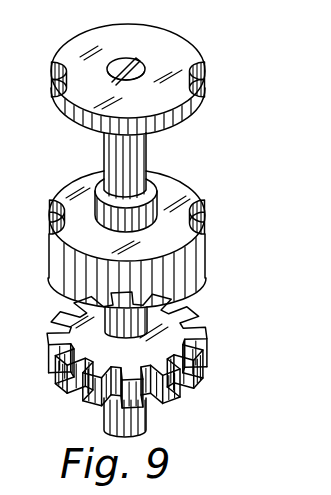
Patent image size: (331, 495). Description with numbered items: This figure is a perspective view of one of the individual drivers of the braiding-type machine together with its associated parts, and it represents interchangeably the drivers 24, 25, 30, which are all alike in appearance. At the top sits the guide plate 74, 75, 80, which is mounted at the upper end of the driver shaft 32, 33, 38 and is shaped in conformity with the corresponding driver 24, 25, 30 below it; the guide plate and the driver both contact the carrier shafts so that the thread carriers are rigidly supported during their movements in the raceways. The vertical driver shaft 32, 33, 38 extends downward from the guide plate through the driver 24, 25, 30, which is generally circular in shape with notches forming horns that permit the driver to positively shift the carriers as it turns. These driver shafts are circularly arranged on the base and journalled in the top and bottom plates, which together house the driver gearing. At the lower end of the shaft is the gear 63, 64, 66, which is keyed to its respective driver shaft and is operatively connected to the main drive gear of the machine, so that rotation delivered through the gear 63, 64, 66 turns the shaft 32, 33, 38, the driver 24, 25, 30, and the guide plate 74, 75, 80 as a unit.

The guide plate 74 is at (171, 79).
The guide plate 75 is at (171, 79).
The guide plate 80 is at (172, 60).
The driver shaft 32 is at (183, 235).
The driver shaft 33 is at (183, 235).
The driver shaft 38 is at (135, 163).
The driver 24 is at (165, 239).
The driver 25 is at (165, 239).
The driver 30 is at (168, 208).
The gear 63 is at (162, 364).
The gear 64 is at (162, 364).
The gear 66 is at (173, 393).